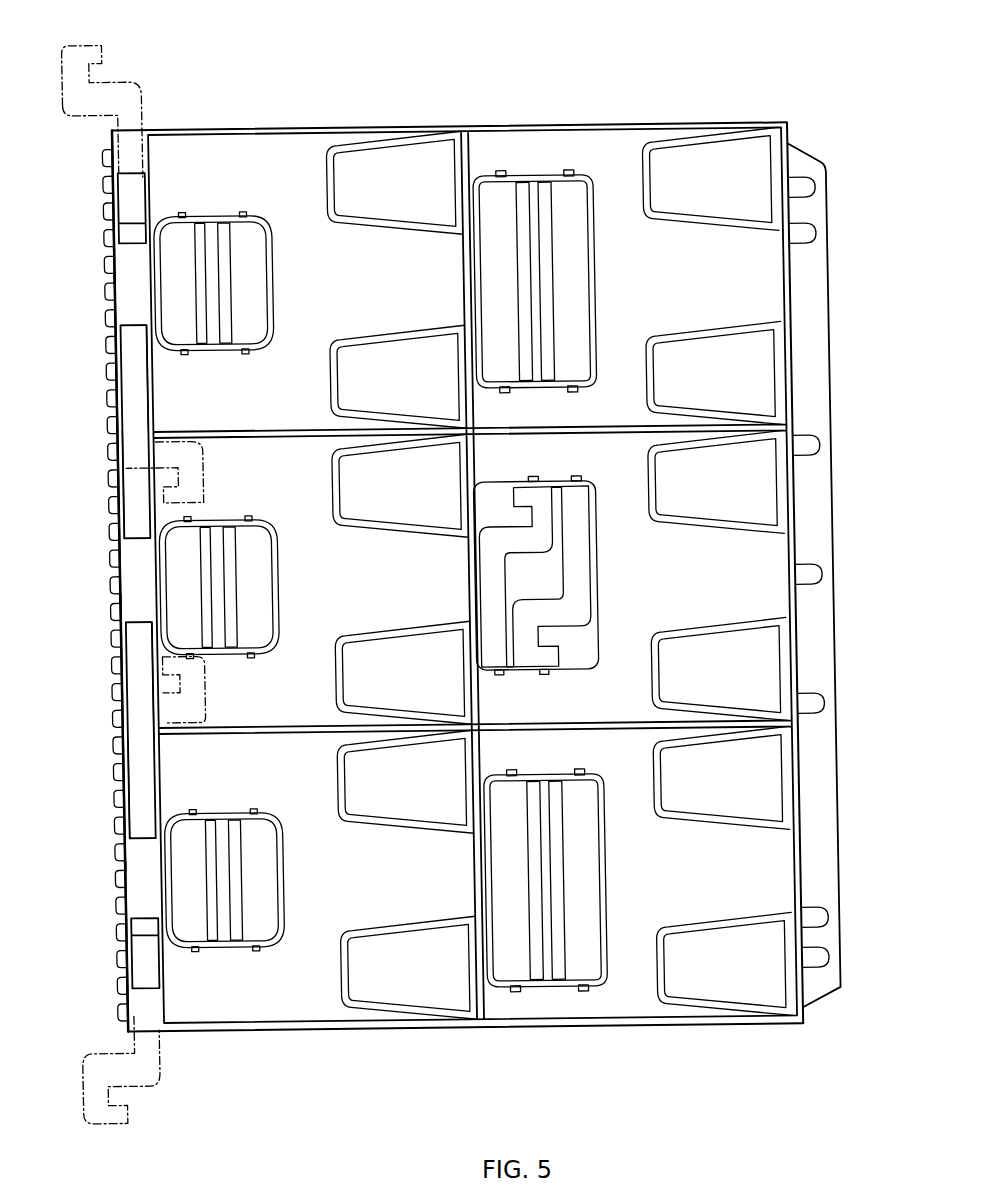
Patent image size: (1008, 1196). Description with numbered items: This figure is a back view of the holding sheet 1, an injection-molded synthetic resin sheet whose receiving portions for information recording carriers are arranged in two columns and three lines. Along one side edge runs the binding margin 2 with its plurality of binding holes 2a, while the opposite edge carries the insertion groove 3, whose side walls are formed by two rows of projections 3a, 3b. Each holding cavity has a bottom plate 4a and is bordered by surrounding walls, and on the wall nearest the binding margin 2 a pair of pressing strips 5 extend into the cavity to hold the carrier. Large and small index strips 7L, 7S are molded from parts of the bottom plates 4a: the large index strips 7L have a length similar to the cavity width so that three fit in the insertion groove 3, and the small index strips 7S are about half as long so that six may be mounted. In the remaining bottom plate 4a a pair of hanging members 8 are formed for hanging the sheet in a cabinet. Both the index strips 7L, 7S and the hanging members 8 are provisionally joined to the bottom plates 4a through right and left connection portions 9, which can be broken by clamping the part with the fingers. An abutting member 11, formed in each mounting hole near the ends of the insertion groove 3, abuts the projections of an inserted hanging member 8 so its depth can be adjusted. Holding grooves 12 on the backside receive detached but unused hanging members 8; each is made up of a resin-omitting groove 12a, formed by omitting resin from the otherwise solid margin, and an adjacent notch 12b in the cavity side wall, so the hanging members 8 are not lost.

The holding sheet 1 is at (442, 98).
The binding margin 2 is at (830, 372).
The binding holes 2a is at (808, 237).
The insertion groove 3 is at (112, 545).
The projections 3a is at (110, 232).
The projections 3b is at (112, 275).
The bottom plate 4a is at (297, 185).
The pressing strips 5 is at (375, 357).
The small index strips 7S is at (243, 257).
The large index strips 7L is at (558, 212).
The hanging members 8 is at (128, 80).
The connection portions 9 is at (182, 352).
The abutting member 11 is at (125, 175).
The holding grooves 12 is at (58, 320).
The resin-omitting groove 12a is at (137, 395).
The notch 12b is at (152, 455).